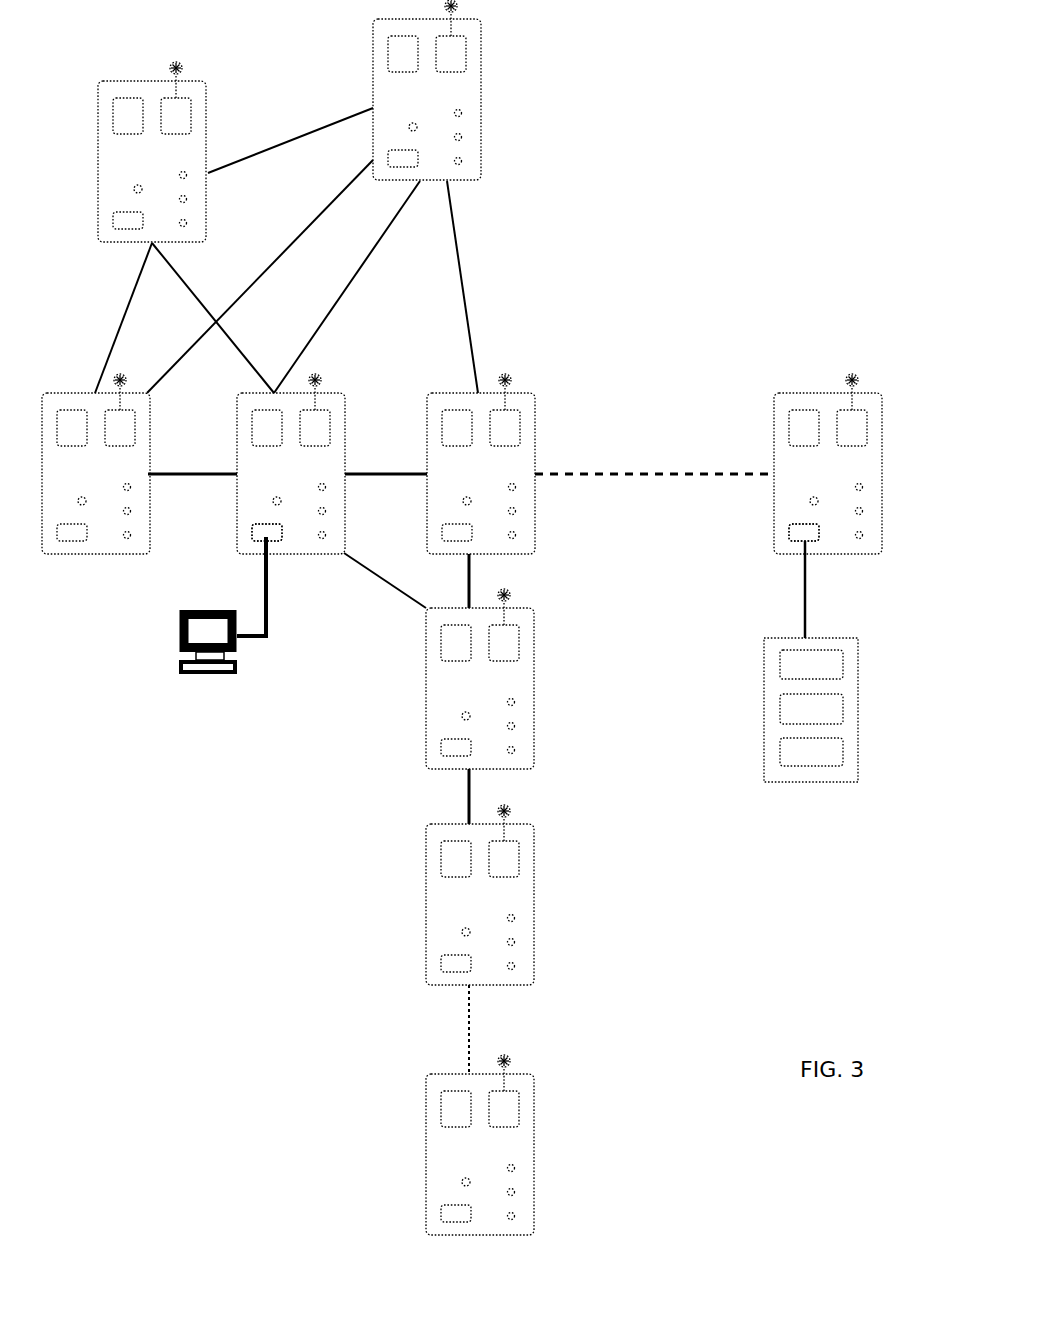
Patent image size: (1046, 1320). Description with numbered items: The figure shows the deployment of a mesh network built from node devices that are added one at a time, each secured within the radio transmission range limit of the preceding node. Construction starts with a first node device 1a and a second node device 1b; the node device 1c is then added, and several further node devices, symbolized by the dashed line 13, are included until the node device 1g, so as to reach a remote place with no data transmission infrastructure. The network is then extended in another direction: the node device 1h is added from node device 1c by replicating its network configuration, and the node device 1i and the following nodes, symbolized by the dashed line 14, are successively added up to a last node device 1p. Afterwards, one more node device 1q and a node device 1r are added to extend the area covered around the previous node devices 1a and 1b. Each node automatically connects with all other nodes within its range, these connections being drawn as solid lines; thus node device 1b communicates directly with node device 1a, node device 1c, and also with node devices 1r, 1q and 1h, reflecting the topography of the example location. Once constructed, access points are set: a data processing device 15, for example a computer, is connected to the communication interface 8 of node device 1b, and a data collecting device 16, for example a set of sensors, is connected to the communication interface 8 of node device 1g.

The first node device 1a is at (73, 392).
The second node device 1b is at (302, 555).
The node device 1c is at (513, 465).
The node device 1g is at (828, 410).
The node device 1h is at (533, 690).
The node device 1i is at (533, 905).
The last node device 1p is at (533, 1162).
The node device 1q is at (481, 98).
The node device 1r is at (131, 80).
The communication interface 8 is at (252, 535).
The dashed line 13 is at (608, 475).
The dashed line 14 is at (466, 1028).
The data processing device 15 is at (213, 672).
The data collecting device 16 is at (778, 686).